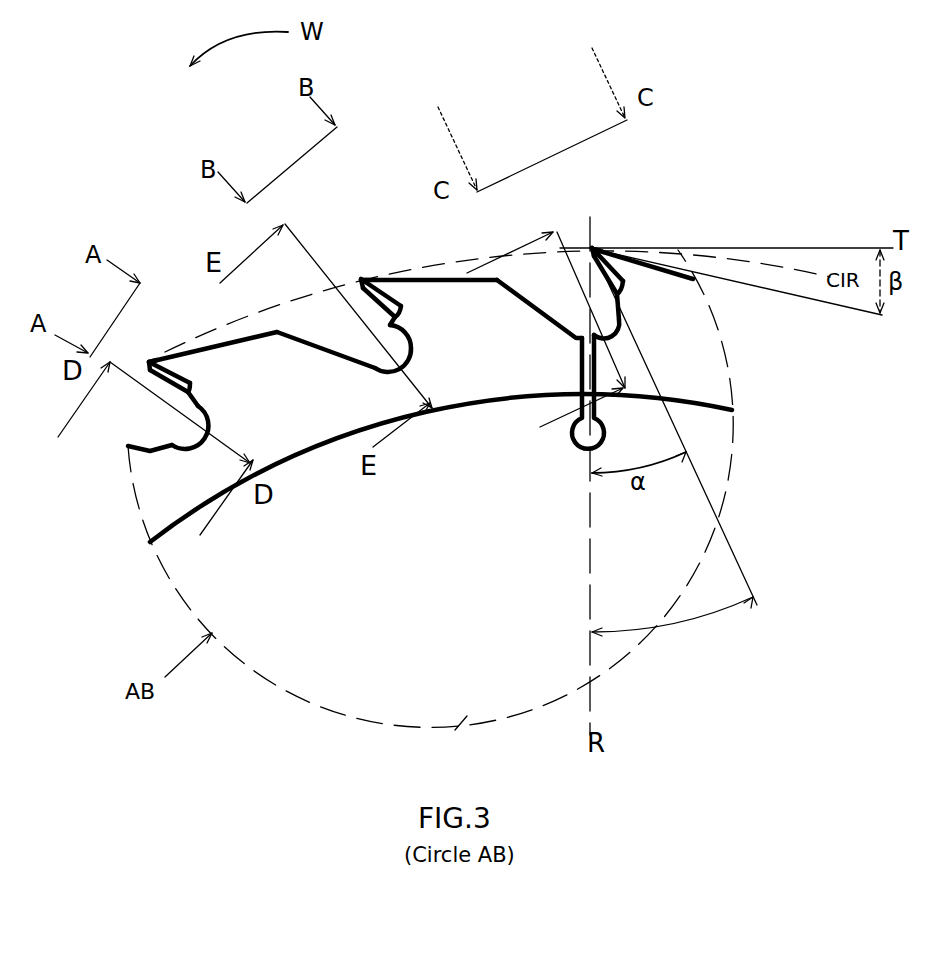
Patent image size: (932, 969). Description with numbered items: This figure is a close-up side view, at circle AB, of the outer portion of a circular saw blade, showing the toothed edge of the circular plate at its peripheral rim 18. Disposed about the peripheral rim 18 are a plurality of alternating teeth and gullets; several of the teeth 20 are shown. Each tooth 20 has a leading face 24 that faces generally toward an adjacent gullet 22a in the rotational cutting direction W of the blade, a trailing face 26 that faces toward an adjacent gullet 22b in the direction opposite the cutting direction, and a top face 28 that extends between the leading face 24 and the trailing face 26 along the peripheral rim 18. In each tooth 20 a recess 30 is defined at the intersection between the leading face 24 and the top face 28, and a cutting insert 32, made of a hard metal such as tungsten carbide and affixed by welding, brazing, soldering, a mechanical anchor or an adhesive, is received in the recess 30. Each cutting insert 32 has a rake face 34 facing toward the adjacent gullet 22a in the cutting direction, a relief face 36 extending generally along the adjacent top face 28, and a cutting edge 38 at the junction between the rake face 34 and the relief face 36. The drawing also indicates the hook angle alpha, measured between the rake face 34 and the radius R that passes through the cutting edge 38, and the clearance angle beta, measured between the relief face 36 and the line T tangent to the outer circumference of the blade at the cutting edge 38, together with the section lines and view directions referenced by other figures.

The peripheral rim 18 is at (223, 343).
The tooth 20 is at (401, 289).
The adjacent gullet 22a is at (376, 366).
The adjacent gullet 22b is at (558, 335).
The leading face 24 is at (202, 418).
The trailing face 26 is at (312, 347).
The top face 28 is at (248, 336).
The recess 30 is at (404, 293).
The cutting insert 32 is at (178, 374).
The rake face 34 is at (168, 373).
The relief face 36 is at (153, 361).
The cutting edge 38 is at (148, 361).